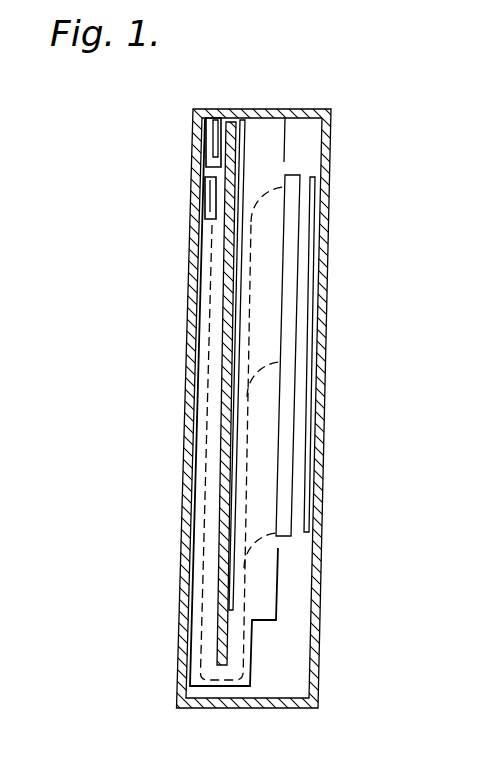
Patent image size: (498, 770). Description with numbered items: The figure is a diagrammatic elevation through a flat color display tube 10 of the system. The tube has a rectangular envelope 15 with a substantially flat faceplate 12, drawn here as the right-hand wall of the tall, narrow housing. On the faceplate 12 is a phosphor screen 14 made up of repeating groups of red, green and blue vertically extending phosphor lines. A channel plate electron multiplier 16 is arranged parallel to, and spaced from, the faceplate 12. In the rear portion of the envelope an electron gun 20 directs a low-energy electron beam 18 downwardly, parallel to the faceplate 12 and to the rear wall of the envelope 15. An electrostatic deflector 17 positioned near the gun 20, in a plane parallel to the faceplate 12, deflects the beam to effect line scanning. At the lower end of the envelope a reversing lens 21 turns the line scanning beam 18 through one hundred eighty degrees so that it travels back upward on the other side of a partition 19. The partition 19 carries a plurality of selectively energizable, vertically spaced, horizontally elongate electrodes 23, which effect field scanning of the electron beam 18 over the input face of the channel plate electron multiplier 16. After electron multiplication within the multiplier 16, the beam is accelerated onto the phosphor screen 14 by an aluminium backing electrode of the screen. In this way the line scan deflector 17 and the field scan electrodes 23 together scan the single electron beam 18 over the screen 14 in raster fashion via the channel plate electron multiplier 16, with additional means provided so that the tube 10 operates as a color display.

The flat color display tube 10 is at (257, 388).
The faceplate 12 is at (331, 214).
The phosphor screen 14 is at (323, 271).
The rectangular envelope 15 is at (203, 110).
The channel plate electron multiplier 16 is at (288, 417).
The electrostatic deflector 17 is at (206, 204).
The electron beam 18 is at (207, 453).
The partition 19 is at (238, 110).
The electron gun 20 is at (212, 143).
The reversing lens 21 is at (266, 673).
The electrodes 23 is at (233, 590).